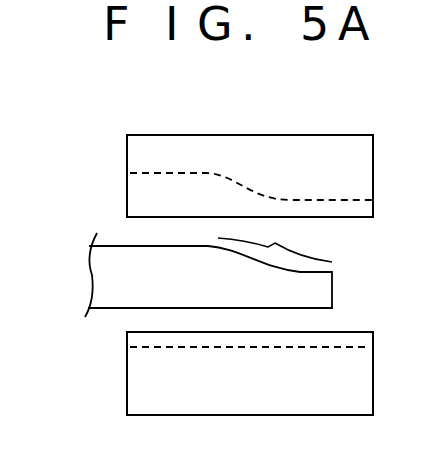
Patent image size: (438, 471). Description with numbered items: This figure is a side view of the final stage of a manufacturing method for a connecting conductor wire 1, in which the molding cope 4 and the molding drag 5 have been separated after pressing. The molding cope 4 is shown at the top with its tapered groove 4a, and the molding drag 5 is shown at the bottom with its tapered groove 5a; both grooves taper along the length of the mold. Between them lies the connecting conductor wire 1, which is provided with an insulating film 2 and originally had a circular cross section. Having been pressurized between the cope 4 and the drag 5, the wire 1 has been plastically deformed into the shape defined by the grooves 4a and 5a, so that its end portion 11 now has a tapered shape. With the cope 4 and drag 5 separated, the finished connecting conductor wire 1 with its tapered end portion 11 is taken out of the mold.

The connecting conductor wire 1 is at (86, 287).
The insulating film 2 is at (37, 256).
The molding cope 4 is at (125, 162).
The tapered groove 4a is at (143, 192).
The molding drag 5 is at (122, 388).
The tapered groove 5a is at (127, 345).
The end portion 11 is at (275, 242).